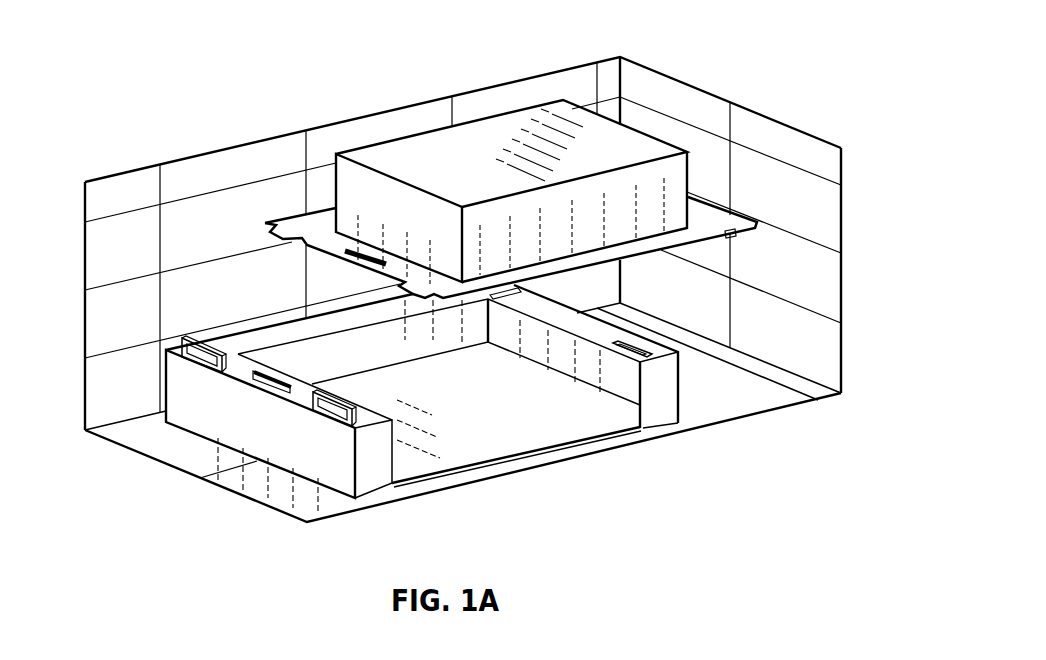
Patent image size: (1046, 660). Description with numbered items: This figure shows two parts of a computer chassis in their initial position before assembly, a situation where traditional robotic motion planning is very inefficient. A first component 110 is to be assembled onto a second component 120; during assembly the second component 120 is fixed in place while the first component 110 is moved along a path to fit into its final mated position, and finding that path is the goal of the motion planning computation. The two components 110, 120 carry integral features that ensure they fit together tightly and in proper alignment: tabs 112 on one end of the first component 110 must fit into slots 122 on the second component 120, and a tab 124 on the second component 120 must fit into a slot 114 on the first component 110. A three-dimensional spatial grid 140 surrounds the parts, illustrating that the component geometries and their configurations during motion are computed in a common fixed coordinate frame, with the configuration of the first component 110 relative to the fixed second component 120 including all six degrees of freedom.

The first component 110 is at (627, 128).
The tabs 112 is at (478, 279).
The slot 114 is at (340, 256).
The second component 120 is at (462, 391).
The slots 122 is at (192, 339).
The tab 124 is at (266, 382).
The three-dimensional spatial grid 140 is at (820, 352).